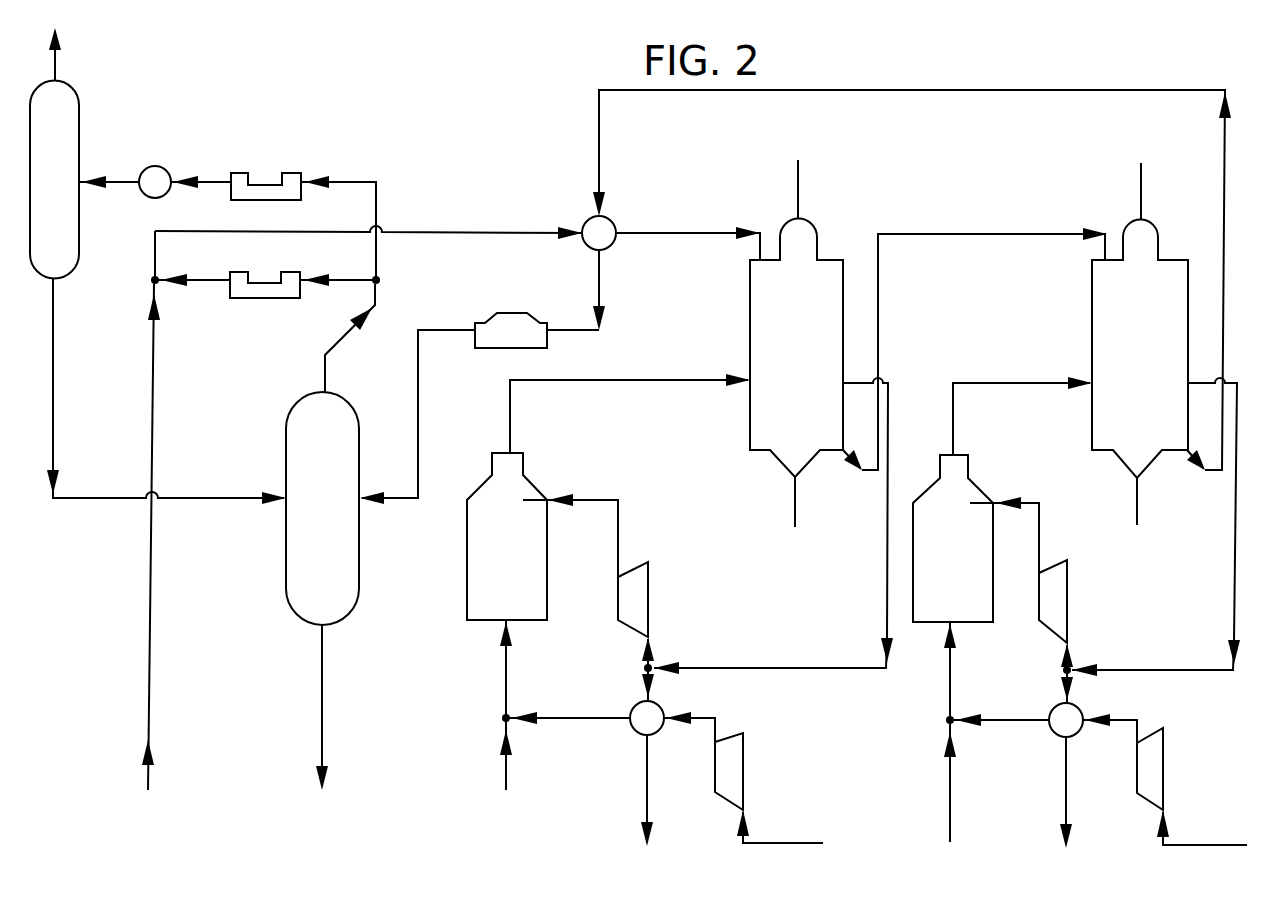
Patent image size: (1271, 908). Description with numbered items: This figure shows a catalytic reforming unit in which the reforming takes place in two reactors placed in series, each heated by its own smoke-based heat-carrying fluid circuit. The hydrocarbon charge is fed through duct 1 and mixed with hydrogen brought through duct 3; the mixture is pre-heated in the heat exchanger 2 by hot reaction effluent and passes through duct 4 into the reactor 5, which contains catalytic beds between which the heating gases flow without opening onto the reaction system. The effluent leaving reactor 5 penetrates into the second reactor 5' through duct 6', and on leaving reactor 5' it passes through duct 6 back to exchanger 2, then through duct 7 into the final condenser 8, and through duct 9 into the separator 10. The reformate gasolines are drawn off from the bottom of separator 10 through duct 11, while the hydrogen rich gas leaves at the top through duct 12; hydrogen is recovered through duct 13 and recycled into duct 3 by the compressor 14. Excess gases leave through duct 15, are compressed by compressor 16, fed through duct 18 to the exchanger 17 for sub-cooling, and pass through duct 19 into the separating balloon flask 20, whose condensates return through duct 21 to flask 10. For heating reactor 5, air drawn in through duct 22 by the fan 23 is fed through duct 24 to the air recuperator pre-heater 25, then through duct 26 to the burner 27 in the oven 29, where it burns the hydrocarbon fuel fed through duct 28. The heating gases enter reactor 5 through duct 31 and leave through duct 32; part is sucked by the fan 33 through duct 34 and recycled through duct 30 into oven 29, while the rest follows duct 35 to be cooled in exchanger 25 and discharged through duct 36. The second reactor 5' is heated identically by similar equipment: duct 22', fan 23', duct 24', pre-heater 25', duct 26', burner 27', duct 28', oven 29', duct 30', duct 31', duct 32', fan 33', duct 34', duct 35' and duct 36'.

The duct 1 is at (497, 231).
The heat exchanger 2 is at (585, 224).
The duct 3 is at (200, 281).
The duct 4 is at (688, 232).
The reactor 5 is at (760, 343).
The second reactor 5' is at (1107, 344).
The duct 6 is at (912, 280).
The duct 6' is at (975, 325).
The duct 7 is at (572, 330).
The final condenser 8 is at (510, 313).
The duct 9 is at (398, 498).
The separator 10 is at (286, 555).
The duct 11 is at (322, 708).
The duct 12 is at (325, 360).
The duct 13 is at (347, 282).
The compressor 14 is at (250, 298).
The duct 15 is at (343, 182).
The compressor 16 is at (262, 185).
The exchanger 17 is at (155, 166).
The duct 18 is at (207, 182).
The duct 19 is at (113, 182).
The separating balloon flask 20 is at (79, 228).
The duct 21 is at (53, 337).
The duct 22 is at (780, 822).
The duct 22' is at (1202, 823).
The fan 23 is at (765, 771).
The fan 23' is at (1186, 769).
The duct 24 is at (728, 720).
The duct 24' is at (1150, 720).
The air recuperator pre-heater 25 is at (623, 735).
The air recuperator pre-heater 25' is at (1041, 737).
The duct 26 is at (570, 694).
The duct 26' is at (1001, 699).
The burner 27 is at (470, 669).
The burner 27' is at (924, 671).
The duct 28 is at (472, 756).
The duct 28' is at (924, 779).
The oven 29 is at (479, 536).
The oven 29' is at (946, 515).
The duct 30 is at (608, 535).
The duct 30' is at (1042, 535).
The duct 31 is at (630, 413).
The duct 31' is at (1022, 416).
The duct 32 is at (773, 526).
The duct 32' is at (1156, 527).
The fan 33 is at (666, 599).
The fan 33' is at (1084, 601).
The duct 34 is at (680, 645).
The duct 34' is at (1099, 646).
The duct 35 is at (618, 682).
The duct 35' is at (1040, 677).
The duct 36 is at (615, 790).
The duct 36' is at (1031, 792).